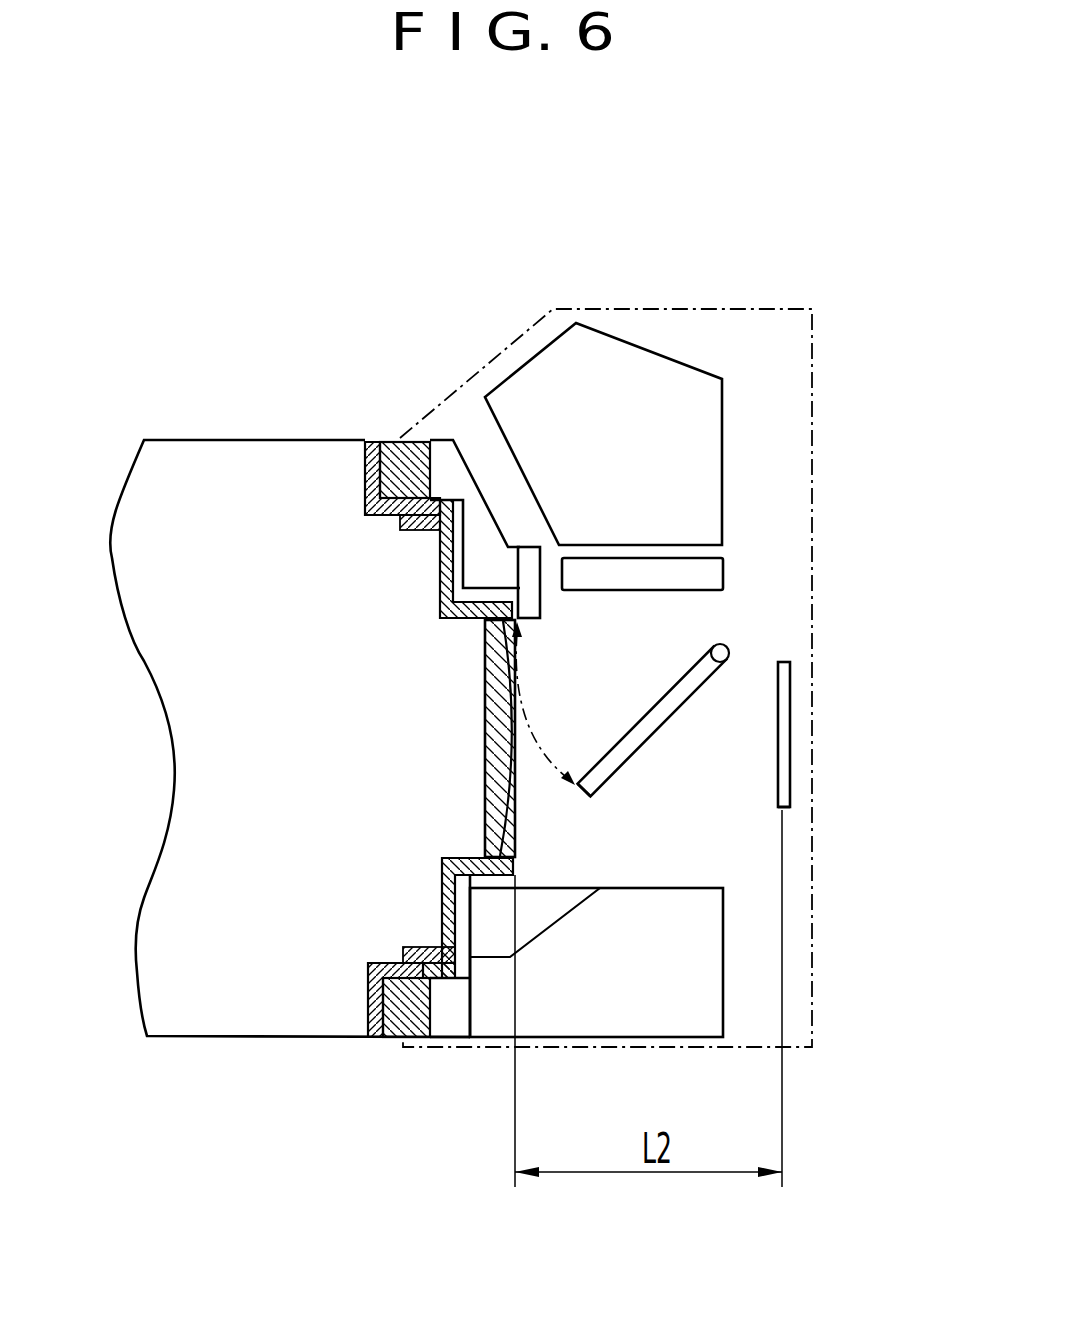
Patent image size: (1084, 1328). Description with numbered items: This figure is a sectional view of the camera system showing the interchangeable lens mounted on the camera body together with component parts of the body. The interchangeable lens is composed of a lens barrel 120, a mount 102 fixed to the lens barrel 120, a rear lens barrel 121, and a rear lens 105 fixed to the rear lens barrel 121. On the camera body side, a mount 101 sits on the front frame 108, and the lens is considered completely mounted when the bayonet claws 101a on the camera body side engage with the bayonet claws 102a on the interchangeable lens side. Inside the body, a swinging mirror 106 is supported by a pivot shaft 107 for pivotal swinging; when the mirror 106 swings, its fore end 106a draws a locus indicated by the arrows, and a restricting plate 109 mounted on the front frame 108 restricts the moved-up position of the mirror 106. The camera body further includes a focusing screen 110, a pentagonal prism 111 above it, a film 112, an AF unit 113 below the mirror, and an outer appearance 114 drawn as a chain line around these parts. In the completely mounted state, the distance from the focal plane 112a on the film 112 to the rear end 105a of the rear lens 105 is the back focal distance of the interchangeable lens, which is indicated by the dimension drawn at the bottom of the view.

The mount 101 is at (395, 442).
The bayonet claws 101a is at (430, 517).
The mount 102 is at (373, 442).
The bayonet claws 102a is at (438, 560).
The rear lens 105 is at (493, 738).
The rear end 105a is at (503, 797).
The swinging mirror 106 is at (668, 703).
The fore end 106a is at (585, 797).
The pivot shaft 107 is at (728, 648).
The front frame 108 is at (443, 457).
The restricting plate 109 is at (535, 600).
The focusing screen 110 is at (705, 573).
The pentagonal prism 111 is at (618, 360).
The film 112 is at (790, 690).
The focal plane 112a is at (778, 800).
The AF unit 113 is at (665, 1013).
The outer appearance 114 is at (715, 310).
The lens barrel 120 is at (182, 465).
The rear lens barrel 121 is at (440, 612).